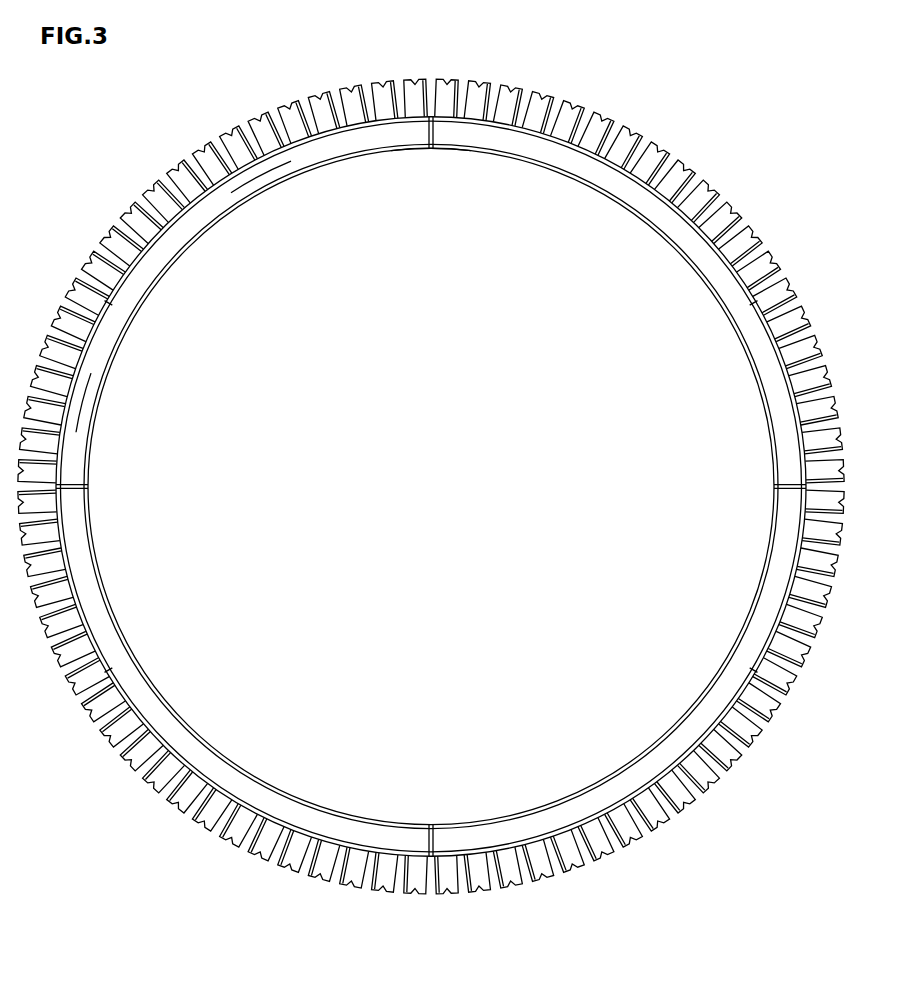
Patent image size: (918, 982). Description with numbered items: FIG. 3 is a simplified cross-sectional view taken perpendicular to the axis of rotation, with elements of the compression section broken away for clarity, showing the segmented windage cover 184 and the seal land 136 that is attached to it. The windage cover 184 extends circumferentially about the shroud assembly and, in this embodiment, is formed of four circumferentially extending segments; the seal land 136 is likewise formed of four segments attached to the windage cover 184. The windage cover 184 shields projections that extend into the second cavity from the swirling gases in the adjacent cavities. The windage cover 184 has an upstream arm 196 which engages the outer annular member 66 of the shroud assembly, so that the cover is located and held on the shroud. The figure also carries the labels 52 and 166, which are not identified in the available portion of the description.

The turbine blades 52 is at (301, 122).
The outer annular member 66 is at (99, 373).
The seal land 136 is at (412, 152).
The ring segment joint 166 is at (59, 488).
The windage cover 184 is at (578, 172).
The upstream arm 196 is at (255, 178).